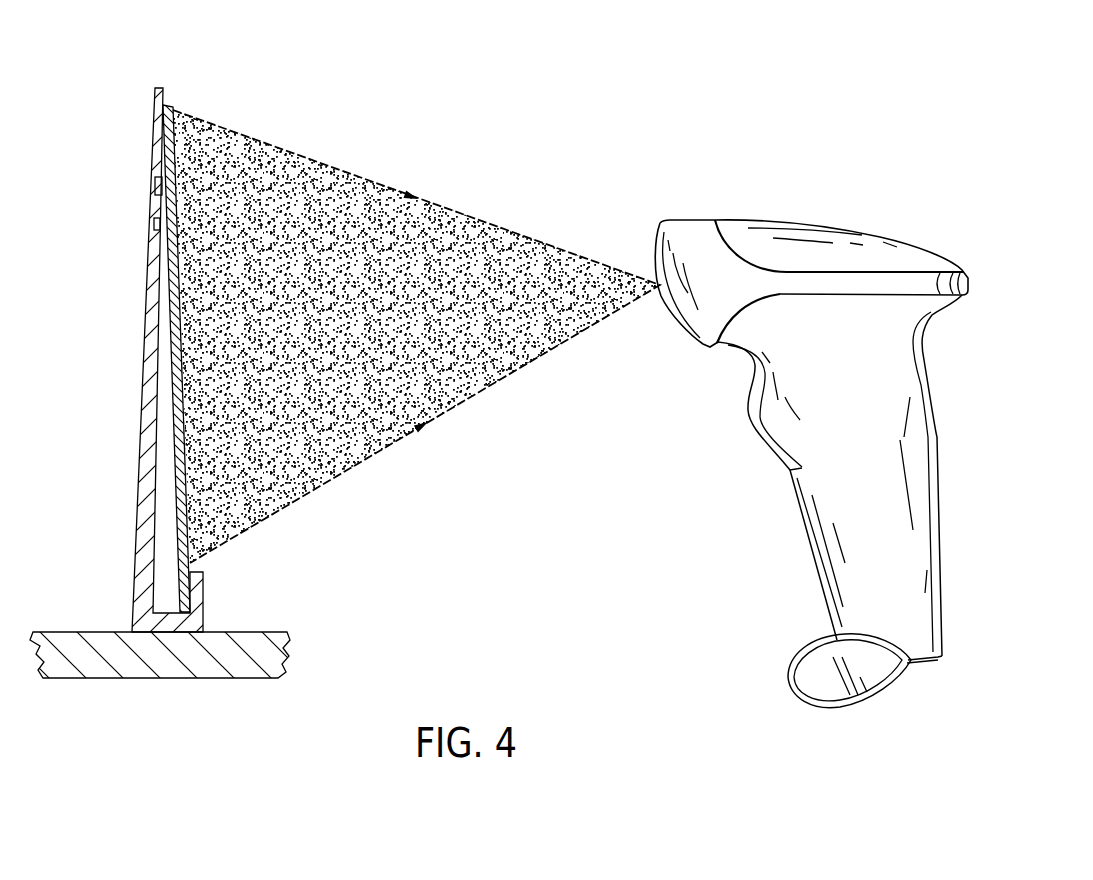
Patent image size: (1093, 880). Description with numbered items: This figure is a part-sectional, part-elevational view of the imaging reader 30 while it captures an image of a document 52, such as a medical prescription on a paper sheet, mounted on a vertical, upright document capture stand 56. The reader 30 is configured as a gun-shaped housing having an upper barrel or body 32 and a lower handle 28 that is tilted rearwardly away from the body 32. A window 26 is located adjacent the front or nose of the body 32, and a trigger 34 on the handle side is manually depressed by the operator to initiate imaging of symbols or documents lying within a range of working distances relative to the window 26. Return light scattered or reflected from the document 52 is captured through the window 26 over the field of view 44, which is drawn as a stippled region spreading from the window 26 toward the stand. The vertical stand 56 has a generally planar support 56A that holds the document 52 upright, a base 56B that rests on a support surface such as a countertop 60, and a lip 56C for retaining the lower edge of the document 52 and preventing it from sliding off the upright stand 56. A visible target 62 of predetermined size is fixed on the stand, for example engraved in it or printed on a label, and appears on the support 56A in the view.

The window 26 is at (659, 298).
The handle 28 is at (942, 503).
The imaging reader 30 is at (862, 447).
The body 32 is at (862, 231).
The trigger 34 is at (748, 403).
The field of view 44 is at (532, 237).
The document 52 is at (168, 105).
The vertical upright stand 56 is at (170, 393).
The planar support 56A is at (148, 372).
The base 56B is at (170, 627).
The lip 56C is at (203, 604).
The countertop 60 is at (75, 641).
The target 62 is at (155, 185).